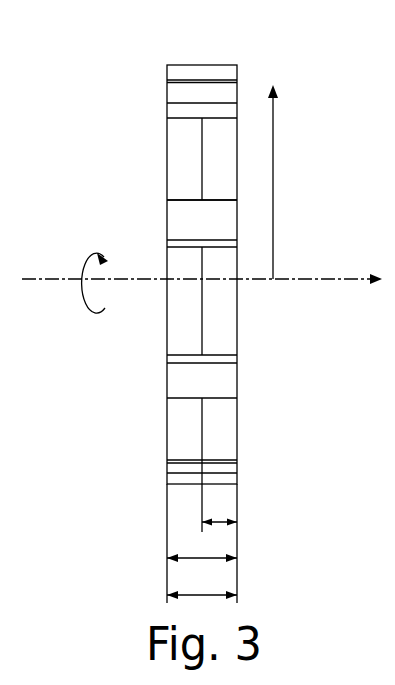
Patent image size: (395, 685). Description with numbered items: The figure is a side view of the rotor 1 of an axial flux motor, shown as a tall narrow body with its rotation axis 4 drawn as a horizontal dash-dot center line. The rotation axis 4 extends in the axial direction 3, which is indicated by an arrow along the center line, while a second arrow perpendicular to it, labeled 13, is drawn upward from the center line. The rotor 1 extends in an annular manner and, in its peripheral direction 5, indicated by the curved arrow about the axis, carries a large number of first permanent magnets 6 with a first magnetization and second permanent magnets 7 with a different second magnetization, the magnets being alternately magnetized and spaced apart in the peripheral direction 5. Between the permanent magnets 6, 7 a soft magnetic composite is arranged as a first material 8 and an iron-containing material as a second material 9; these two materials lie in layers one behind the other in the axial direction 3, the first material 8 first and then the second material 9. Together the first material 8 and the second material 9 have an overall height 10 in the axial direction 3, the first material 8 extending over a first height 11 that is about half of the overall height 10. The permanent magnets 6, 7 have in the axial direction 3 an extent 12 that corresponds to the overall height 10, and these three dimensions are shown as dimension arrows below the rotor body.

The rotor 1 is at (243, 59).
The axial direction 3 is at (366, 293).
The rotation axis 4 is at (200, 295).
The peripheral direction 5 is at (101, 294).
The first permanent magnets 6 is at (183, 214).
The second permanent magnets 7 is at (218, 385).
The first material 8 is at (225, 298).
The second material 9 is at (178, 136).
The overall height 10 is at (202, 543).
The first height 11 is at (219, 506).
The extent 12 is at (202, 583).
The radial direction 13 is at (289, 182).